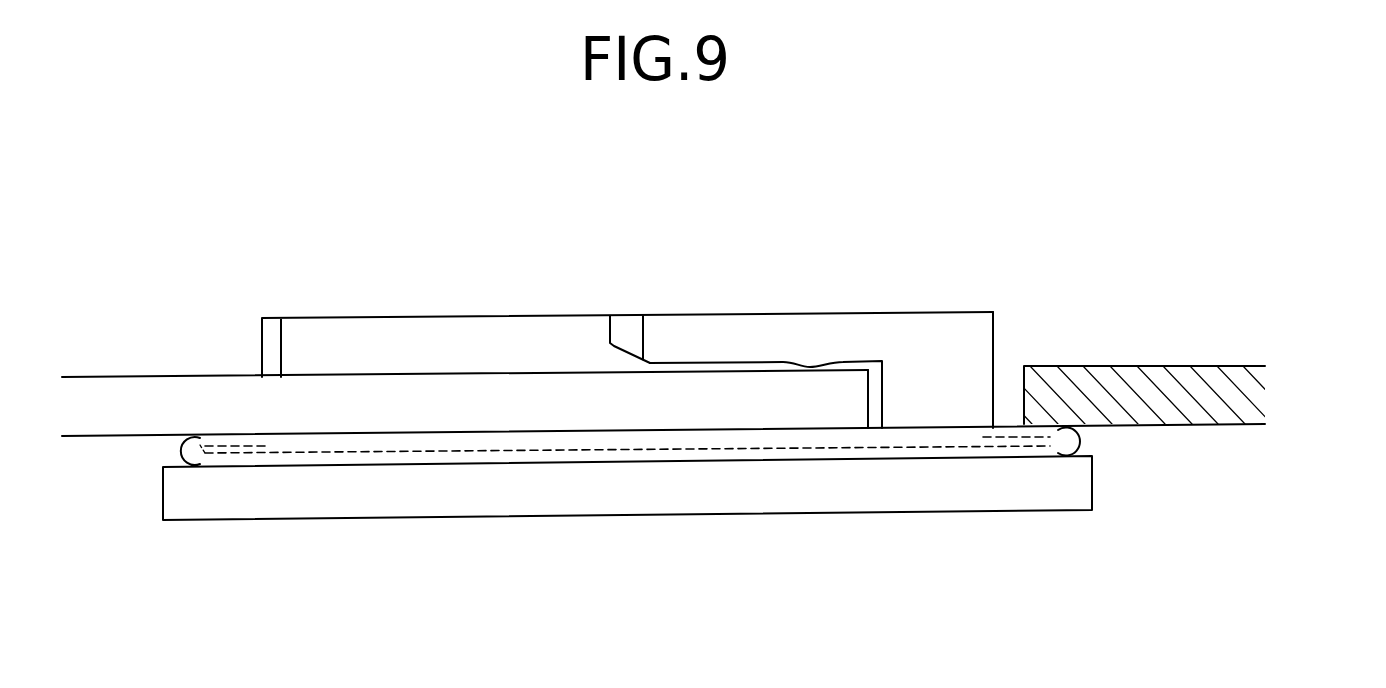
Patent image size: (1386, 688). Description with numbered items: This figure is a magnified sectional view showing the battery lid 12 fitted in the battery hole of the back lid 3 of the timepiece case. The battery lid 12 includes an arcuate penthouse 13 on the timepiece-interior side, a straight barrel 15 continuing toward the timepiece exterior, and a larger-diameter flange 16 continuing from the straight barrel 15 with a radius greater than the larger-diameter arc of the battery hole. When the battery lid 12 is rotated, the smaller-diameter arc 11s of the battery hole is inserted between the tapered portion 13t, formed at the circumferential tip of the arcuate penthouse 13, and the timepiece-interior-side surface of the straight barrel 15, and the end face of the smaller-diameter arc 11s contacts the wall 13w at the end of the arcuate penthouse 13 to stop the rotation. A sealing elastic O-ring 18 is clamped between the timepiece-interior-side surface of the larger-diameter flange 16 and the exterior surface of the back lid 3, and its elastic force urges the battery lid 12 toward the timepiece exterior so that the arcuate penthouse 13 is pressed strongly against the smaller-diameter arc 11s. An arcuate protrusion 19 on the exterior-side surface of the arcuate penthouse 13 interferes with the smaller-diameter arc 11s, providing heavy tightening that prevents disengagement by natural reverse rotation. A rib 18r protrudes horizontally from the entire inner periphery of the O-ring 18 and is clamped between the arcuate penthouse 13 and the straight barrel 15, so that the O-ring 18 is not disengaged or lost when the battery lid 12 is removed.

The back lid 3 is at (133, 405).
The battery lid 12 is at (435, 285).
The arcuate penthouse 13 is at (785, 330).
The tapered portion 13t is at (623, 352).
The wall 13w is at (940, 393).
The smaller-diameter arc 11s is at (707, 432).
The arcuate protrusion 19 is at (815, 363).
The straight barrel 15 is at (970, 452).
The larger-diameter flange 16 is at (1072, 490).
The sealing elastic O-ring 18 is at (1078, 437).
The rib 18r is at (1047, 452).